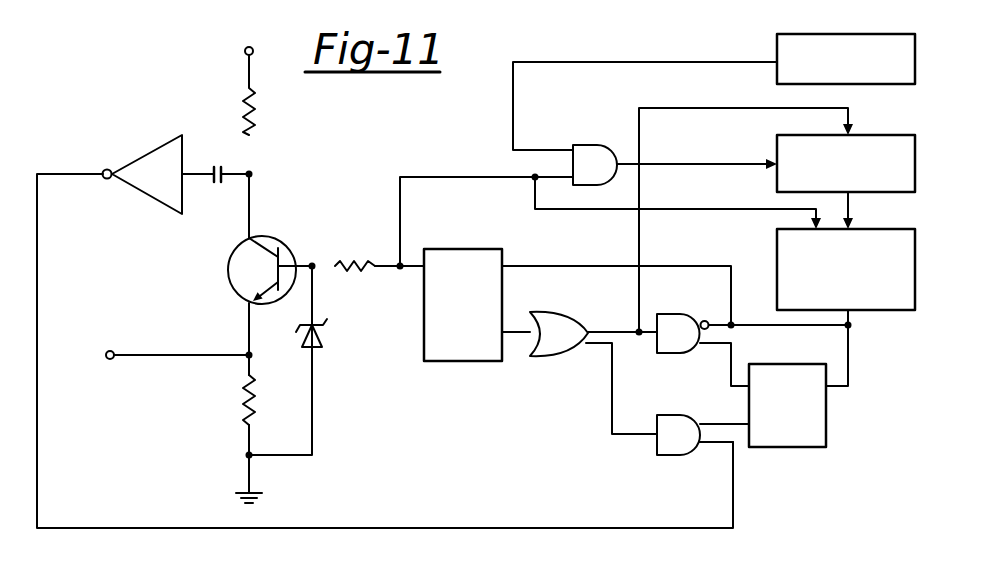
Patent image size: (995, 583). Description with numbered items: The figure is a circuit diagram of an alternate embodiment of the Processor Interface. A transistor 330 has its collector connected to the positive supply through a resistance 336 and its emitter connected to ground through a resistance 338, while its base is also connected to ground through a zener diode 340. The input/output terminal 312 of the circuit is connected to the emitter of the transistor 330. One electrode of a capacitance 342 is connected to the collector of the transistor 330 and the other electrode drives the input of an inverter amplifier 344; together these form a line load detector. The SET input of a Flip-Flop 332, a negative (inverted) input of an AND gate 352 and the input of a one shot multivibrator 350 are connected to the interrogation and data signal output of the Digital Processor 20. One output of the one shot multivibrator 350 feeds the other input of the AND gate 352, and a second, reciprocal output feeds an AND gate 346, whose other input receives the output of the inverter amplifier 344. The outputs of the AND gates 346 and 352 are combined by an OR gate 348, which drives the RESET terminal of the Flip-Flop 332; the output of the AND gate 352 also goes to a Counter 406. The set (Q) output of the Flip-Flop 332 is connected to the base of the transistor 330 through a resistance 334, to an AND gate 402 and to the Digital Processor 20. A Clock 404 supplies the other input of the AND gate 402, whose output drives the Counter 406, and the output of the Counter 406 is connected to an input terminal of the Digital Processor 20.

The Digital Processor 20 is at (777, 262).
The input/output terminal 312 is at (112, 350).
The transistor 330 is at (280, 238).
The Flip-Flop 332 is at (470, 361).
The resistance 334 is at (355, 270).
The resistance 336 is at (255, 118).
The resistance 338 is at (240, 398).
The zener diode 340 is at (305, 342).
The capacitance 342 is at (219, 164).
The inverter amplifier 344 is at (152, 205).
The AND gate 346 is at (685, 455).
The OR gate 348 is at (568, 360).
The one shot multivibrator 350 is at (797, 447).
The AND gate 352 is at (703, 312).
The AND gate 402 is at (590, 145).
The Clock 404 is at (777, 42).
The Counter 406 is at (777, 183).